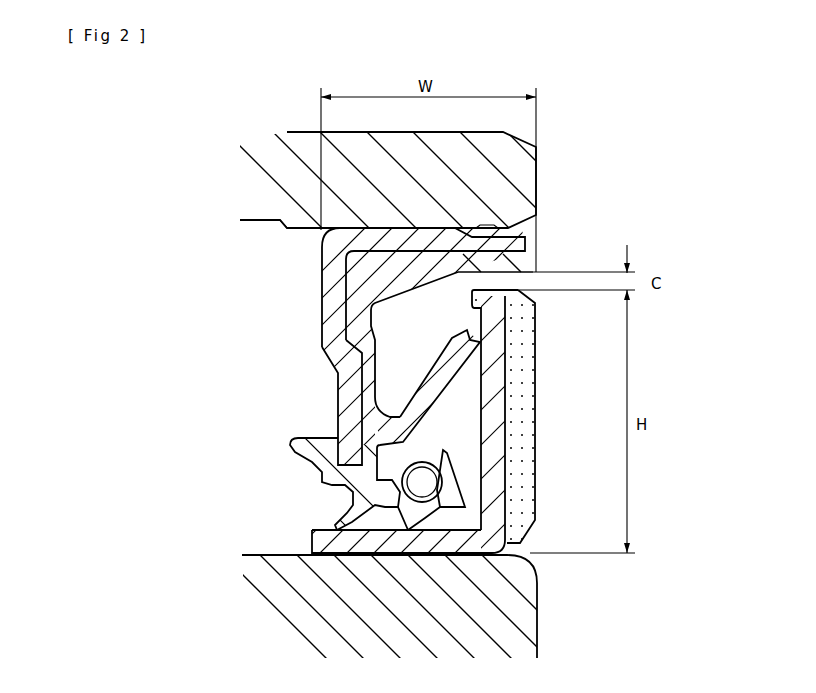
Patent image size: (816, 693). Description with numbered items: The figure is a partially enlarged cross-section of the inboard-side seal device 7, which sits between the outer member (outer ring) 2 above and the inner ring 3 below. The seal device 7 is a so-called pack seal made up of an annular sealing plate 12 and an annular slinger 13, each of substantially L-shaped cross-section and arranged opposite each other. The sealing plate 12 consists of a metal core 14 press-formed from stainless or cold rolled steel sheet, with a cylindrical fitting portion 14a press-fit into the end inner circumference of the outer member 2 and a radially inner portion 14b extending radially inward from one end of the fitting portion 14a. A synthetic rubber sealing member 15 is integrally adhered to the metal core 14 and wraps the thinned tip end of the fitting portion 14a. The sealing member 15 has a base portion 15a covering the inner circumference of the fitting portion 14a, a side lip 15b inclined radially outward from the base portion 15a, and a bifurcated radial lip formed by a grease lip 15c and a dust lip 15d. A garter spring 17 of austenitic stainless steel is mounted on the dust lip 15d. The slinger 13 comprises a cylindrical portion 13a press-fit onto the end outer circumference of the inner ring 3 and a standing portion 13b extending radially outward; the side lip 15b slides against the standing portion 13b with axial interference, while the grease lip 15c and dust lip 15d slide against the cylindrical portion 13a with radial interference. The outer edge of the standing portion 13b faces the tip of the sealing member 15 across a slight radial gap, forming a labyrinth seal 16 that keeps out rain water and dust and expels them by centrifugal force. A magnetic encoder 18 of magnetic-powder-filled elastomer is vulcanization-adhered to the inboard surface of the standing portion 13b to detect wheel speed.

The outer member (outer ring) 2 is at (350, 155).
The inner ring 3 is at (336, 574).
The inboard-side seal device 7 is at (239, 243).
The sealing plate 12 is at (128, 305).
The slinger 13 is at (675, 447).
The cylindrical portion 13a is at (482, 497).
The standing portion 13b is at (493, 413).
The metal core 14 is at (183, 270).
The cylindrical fitting portion 14a is at (320, 233).
The radially inner portion 14b is at (333, 306).
The sealing member 15 is at (183, 353).
The base portion 15a is at (452, 337).
The side lip 15b is at (345, 371).
The grease lip 15c is at (312, 482).
The dust lip 15d is at (445, 448).
The labyrinth seal 16 is at (478, 276).
The garter spring 17 is at (402, 495).
The magnetic encoder 18 is at (513, 373).